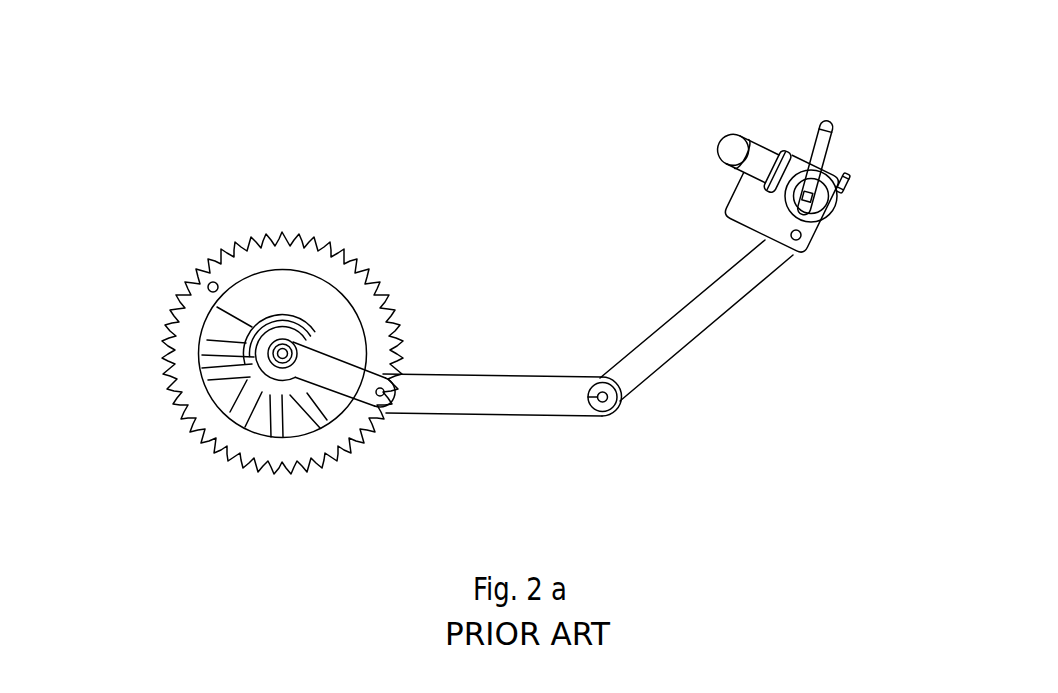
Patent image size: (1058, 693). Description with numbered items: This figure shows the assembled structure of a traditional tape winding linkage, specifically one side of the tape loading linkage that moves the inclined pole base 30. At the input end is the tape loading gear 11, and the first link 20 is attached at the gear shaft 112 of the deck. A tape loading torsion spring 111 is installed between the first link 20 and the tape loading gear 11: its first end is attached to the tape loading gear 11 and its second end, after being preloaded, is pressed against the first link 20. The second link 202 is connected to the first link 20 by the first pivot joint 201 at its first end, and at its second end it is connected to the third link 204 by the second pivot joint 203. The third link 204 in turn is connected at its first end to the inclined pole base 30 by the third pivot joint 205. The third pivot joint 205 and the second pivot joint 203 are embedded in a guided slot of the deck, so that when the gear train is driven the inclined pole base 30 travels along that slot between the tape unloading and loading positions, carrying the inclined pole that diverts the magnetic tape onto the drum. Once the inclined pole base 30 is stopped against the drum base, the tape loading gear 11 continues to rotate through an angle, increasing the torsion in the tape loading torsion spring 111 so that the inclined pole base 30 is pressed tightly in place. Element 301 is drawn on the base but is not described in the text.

The tape loading gear 11 is at (265, 346).
The tape loading torsion spring 111 is at (230, 353).
The gear shaft 112 is at (294, 346).
The first link 20 is at (375, 400).
The first pivot joint 201 is at (386, 376).
The second link 202 is at (490, 395).
The second pivot joint 203 is at (590, 412).
The third link 204 is at (730, 302).
The inclined pole base 30 is at (792, 134).
The cylinder 301 is at (755, 143).
The third pivot joint 205 is at (842, 175).